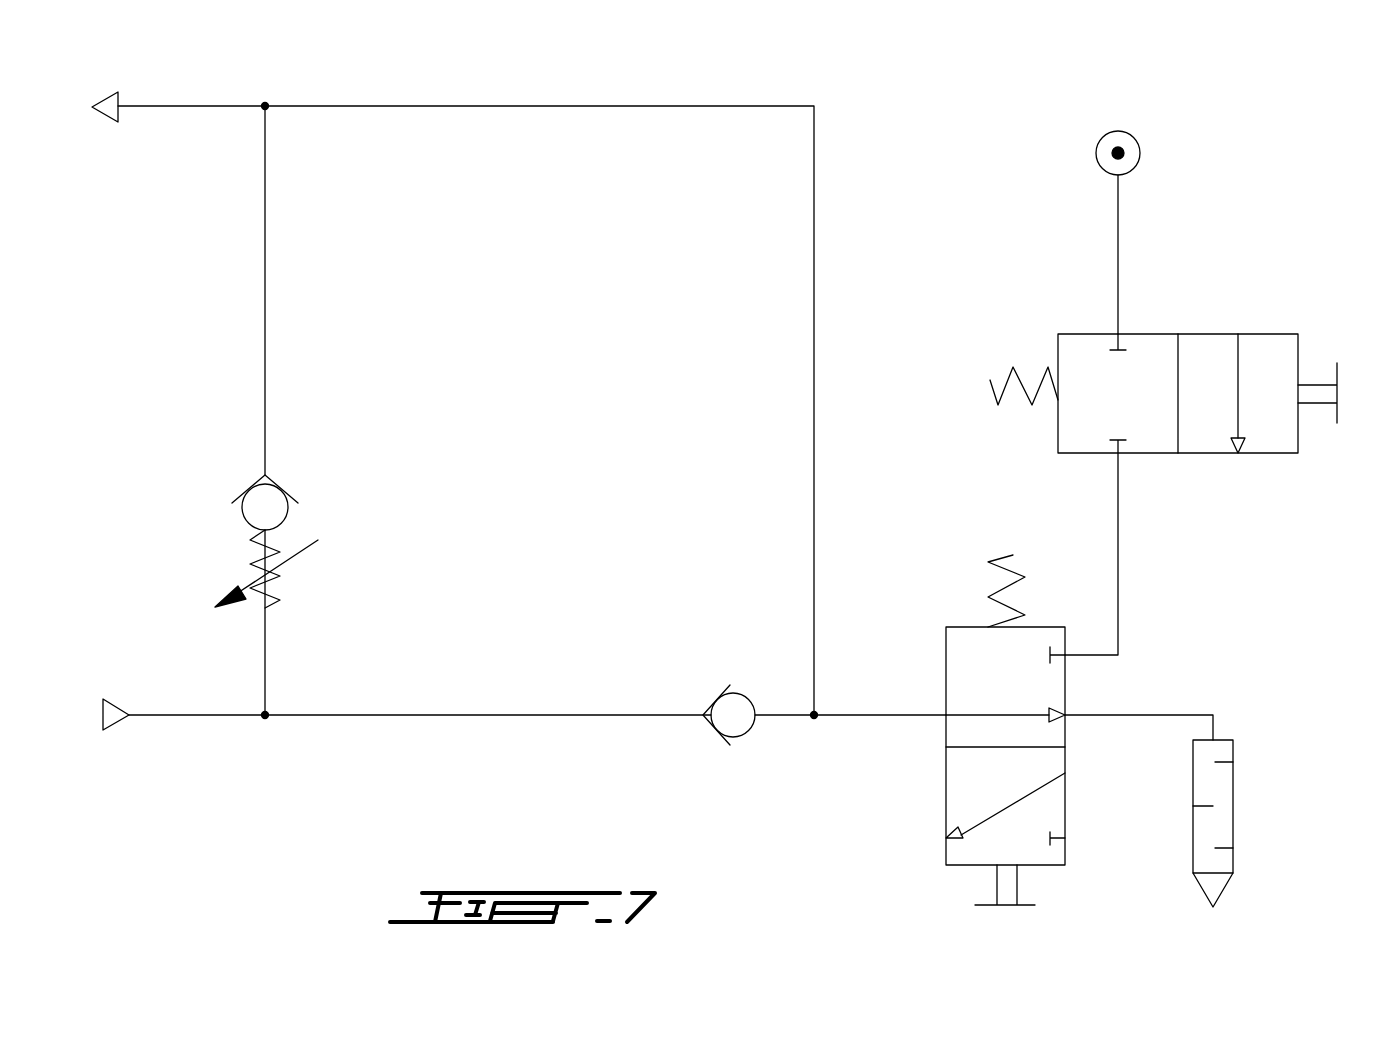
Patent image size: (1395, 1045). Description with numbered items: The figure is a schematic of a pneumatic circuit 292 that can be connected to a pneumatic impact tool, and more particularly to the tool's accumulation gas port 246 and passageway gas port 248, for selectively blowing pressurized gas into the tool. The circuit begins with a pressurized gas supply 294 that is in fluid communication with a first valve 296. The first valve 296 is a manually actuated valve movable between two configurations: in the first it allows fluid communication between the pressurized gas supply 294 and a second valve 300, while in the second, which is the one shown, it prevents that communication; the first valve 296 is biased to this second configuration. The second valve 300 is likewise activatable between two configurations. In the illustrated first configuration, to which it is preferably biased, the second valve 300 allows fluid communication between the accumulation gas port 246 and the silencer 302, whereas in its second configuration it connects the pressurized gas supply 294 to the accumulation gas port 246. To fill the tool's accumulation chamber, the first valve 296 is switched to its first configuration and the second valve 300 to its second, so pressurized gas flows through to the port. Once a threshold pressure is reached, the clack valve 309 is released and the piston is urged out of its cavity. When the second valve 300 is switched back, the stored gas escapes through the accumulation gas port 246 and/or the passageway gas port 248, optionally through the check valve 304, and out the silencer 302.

The pneumatic circuit 292 is at (905, 95).
The accumulation gas port 246 is at (103, 122).
The passageway gas port 248 is at (118, 728).
The clack valve 309 is at (288, 517).
The check valve 304 is at (745, 737).
The pressurized gas supply 294 is at (1141, 153).
The first valve 296 is at (1262, 334).
The second valve 300 is at (1065, 687).
The silencer 302 is at (1233, 795).